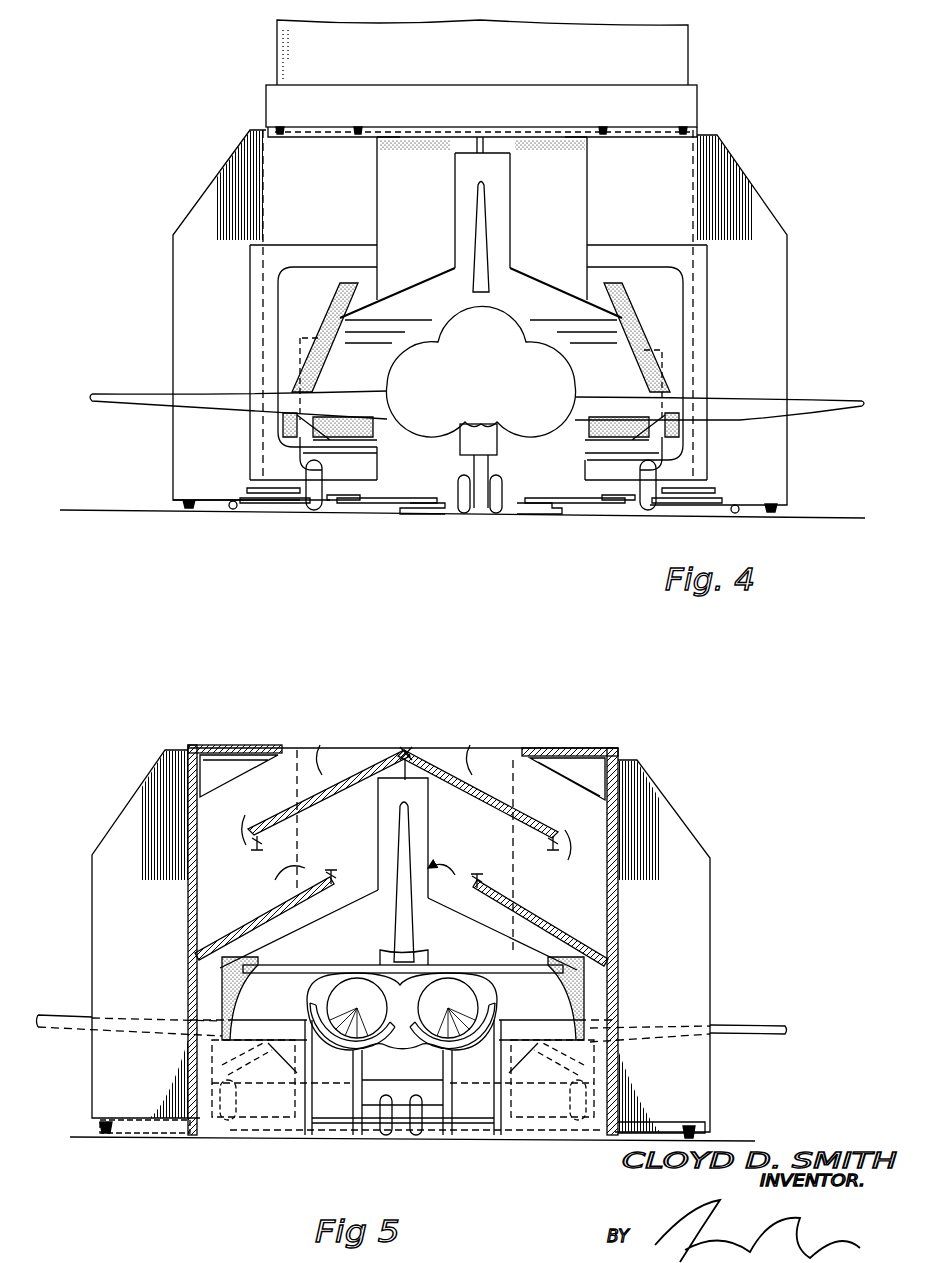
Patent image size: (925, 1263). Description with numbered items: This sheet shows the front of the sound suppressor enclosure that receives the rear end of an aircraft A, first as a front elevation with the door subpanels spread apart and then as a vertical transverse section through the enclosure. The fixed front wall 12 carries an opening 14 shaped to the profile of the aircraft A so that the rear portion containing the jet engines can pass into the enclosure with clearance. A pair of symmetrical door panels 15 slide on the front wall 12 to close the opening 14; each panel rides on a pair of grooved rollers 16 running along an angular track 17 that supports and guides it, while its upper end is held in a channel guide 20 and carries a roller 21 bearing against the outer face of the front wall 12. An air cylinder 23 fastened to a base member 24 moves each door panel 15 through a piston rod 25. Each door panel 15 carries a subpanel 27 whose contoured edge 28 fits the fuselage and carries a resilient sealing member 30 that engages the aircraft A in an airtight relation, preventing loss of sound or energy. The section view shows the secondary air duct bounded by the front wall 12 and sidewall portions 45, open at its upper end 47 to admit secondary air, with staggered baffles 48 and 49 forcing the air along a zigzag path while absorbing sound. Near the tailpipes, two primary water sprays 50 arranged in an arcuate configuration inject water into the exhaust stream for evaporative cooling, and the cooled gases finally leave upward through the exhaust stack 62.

In FIG. 4, the exhaust stack 62 is at (655, 45).
In FIG. 4, the channel guide 20 is at (400, 128).
In FIG. 4, the roller 21 is at (358, 127).
In FIG. 4, the door panel 15 is at (220, 192).
In FIG. 5, the door panel 15 is at (118, 842).
In FIG. 4, the front wall 12 is at (432, 216).
In FIG. 5, the front wall 12 is at (351, 842).
In FIG. 4, the opening 14 is at (395, 298).
In FIG. 5, the opening 14 is at (316, 930).
In FIG. 4, the subpanel 27 is at (325, 308).
In FIG. 4, the contoured edge 28 is at (330, 335).
In FIG. 4, the resilient sealing member 30 is at (318, 365).
In FIG. 5, the resilient sealing member 30 is at (242, 985).
In FIG. 4, the piston rod 25 is at (292, 505).
In FIG. 4, the base member 24 is at (358, 511).
In FIG. 4, the air cylinder 23 is at (412, 504).
In FIG. 4, the angular track 17 is at (233, 509).
In FIG. 5, the angular track 17 is at (140, 1133).
In FIG. 4, the rollers 16 is at (186, 506).
In FIG. 5, the rollers 16 is at (105, 1133).
In FIG. 5, the upper end of secondary air duct 47 is at (232, 746).
In FIG. 5, the baffle 48 is at (366, 780).
In FIG. 5, the baffle 49 is at (245, 937).
In FIG. 5, the sidewall portions 45 is at (188, 912).
In FIG. 5, the primary water sprays 50 is at (297, 1073).
In FIG. 4, the aircraft A is at (507, 300).
In FIG. 5, the aircraft A is at (732, 1022).